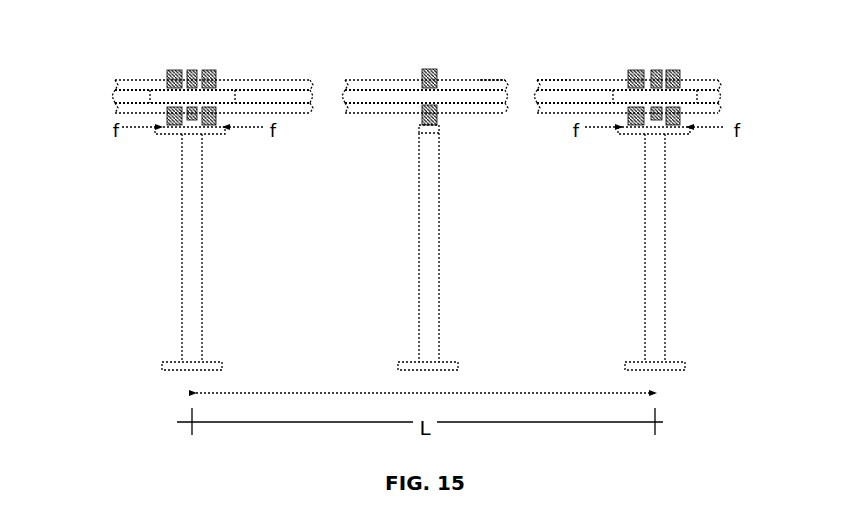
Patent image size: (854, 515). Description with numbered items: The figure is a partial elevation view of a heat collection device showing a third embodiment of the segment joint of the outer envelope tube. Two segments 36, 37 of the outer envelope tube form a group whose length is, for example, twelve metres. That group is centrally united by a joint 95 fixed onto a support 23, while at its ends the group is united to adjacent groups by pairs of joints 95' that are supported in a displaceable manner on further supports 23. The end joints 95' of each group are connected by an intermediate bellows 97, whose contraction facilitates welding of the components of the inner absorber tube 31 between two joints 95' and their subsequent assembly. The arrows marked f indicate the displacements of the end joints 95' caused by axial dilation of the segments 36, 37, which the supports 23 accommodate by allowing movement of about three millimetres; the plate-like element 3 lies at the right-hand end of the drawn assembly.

The plate 3 is at (720, 98).
The support 23 is at (202, 327).
The inner absorber tube 31 is at (120, 98).
The segment of outer envelope tube 36 is at (293, 80).
The segment of outer envelope tube 37 is at (487, 80).
The joint 95 is at (429, 68).
The end joint 95' is at (428, 74).
The bellows device 97 is at (192, 69).